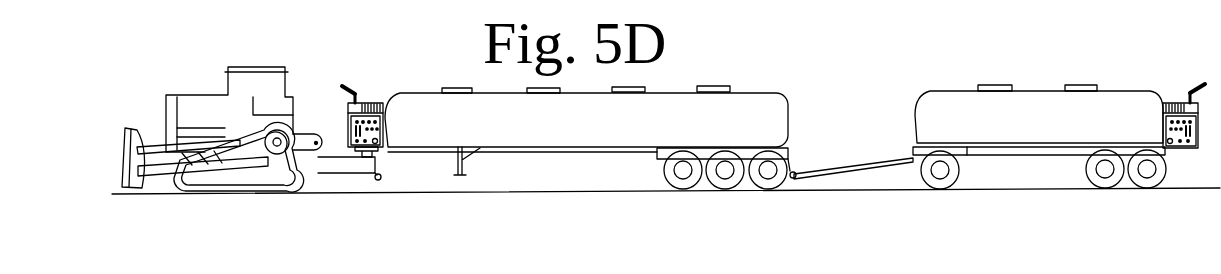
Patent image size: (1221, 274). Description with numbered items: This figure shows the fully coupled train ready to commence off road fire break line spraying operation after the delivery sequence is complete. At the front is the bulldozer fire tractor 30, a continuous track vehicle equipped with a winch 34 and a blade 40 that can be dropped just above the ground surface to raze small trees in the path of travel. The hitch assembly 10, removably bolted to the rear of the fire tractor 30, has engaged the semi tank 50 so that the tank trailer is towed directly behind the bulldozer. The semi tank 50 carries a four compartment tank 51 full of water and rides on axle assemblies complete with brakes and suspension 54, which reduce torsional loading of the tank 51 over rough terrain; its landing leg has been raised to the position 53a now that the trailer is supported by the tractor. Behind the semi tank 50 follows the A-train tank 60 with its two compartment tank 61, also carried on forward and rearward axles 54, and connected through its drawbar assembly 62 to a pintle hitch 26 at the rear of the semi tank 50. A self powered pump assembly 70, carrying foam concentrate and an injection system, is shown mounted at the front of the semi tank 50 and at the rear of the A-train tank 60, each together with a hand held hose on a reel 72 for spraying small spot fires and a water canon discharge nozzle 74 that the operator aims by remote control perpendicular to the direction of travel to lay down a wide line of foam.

The hitch assembly 10 is at (342, 175).
The pintle hitch 26 is at (379, 173).
The bulldozer fire tractor 30 is at (190, 96).
The winch 34 is at (312, 132).
The blade 40 is at (124, 128).
The semi tank 50 is at (586, 138).
The four compartment tank 51 is at (522, 137).
The landing leg raised position 53a is at (467, 163).
The axle assemblies 54 is at (675, 170).
The A-train tank 60 is at (1039, 136).
The two compartment tank 61 is at (1008, 136).
The drawbar assembly 62 is at (842, 157).
The pump assembly 70 is at (347, 127).
The hand held hose on a reel 72 is at (372, 103).
The water canon discharge nozzle 74 is at (352, 92).